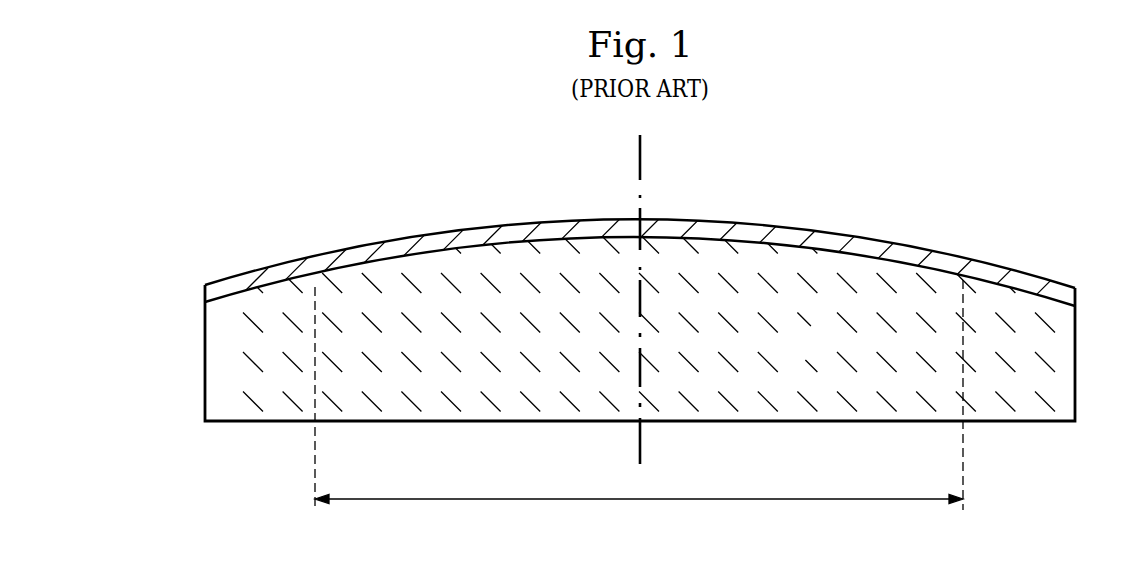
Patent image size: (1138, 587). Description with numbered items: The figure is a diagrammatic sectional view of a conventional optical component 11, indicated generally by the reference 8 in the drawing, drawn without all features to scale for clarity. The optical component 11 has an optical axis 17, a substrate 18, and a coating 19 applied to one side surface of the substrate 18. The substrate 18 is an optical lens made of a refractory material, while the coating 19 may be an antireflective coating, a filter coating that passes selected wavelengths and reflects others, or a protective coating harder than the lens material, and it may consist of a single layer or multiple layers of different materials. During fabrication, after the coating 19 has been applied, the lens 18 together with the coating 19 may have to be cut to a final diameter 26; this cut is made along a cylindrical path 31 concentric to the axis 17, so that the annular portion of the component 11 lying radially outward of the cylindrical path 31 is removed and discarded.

The prior art lens assembly 8 is at (933, 128).
The optical component 11 is at (1094, 293).
The optical axis 17 is at (641, 455).
The substrate 18 is at (787, 355).
The coating 19 is at (1017, 278).
The final diameter 26 is at (757, 499).
The cylindrical path 31 is at (315, 478).